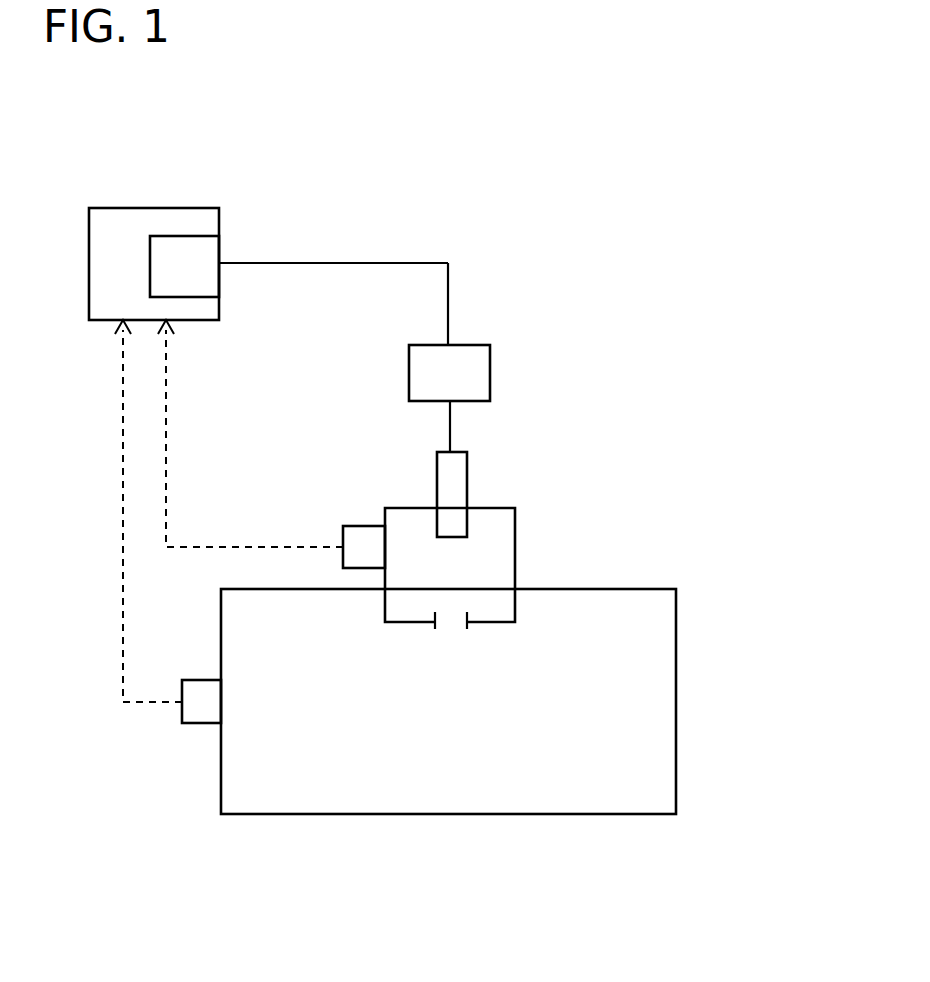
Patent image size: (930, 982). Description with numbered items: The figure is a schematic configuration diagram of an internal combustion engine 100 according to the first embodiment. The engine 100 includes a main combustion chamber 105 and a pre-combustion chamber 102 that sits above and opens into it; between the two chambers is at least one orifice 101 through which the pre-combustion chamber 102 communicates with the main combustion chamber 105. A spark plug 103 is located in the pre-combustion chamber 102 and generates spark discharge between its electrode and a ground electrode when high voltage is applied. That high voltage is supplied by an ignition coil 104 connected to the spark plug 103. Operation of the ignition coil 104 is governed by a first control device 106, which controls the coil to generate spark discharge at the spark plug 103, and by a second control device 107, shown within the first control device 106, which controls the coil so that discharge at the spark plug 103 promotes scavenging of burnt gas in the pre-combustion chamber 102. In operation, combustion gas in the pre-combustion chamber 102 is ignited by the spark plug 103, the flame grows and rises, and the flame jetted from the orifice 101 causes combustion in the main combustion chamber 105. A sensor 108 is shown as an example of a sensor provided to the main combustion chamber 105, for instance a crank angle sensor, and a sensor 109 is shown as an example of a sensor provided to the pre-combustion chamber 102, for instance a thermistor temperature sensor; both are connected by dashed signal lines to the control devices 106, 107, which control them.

The internal combustion engine 100 is at (553, 215).
The orifice 101 is at (450, 618).
The pre-combustion chamber 102 is at (500, 580).
The spark plug 103 is at (455, 480).
The ignition coil 104 is at (473, 365).
The main combustion chamber 105 is at (660, 672).
The first control device 106 is at (177, 215).
The second control device 107 is at (193, 278).
The sensor 108 is at (205, 725).
The sensor 109 is at (345, 525).